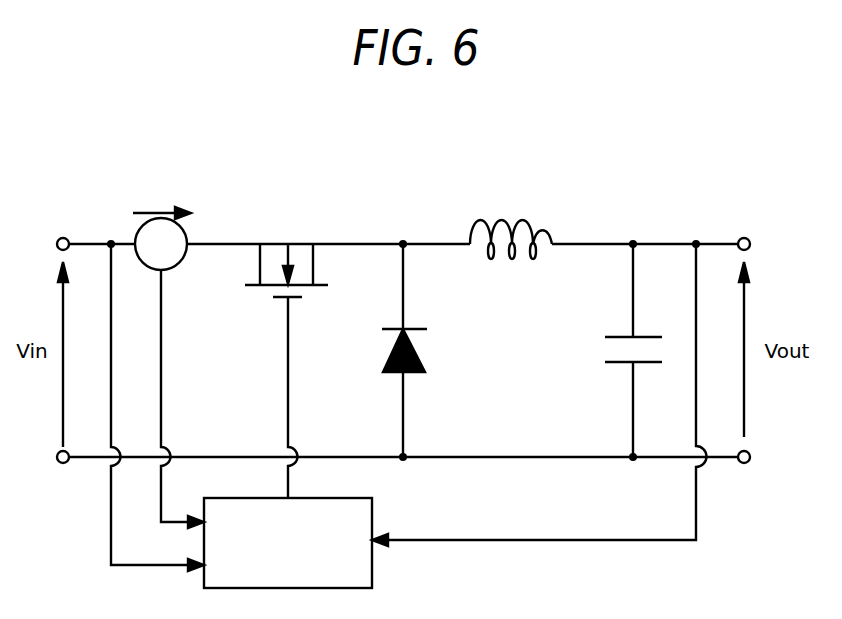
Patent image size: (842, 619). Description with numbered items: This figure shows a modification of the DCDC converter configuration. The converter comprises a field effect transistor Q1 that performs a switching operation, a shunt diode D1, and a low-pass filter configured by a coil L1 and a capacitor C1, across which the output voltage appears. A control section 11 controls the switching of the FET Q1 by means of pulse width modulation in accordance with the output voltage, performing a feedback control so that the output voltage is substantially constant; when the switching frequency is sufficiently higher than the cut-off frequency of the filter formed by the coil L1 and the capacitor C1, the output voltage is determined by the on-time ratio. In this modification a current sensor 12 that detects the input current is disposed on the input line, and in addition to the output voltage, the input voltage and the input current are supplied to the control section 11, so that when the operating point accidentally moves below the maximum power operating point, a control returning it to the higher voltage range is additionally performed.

The control section 11 is at (372, 520).
The current sensor 12 is at (180, 260).
The field effect transistor Q1 is at (286, 354).
The shunt diode D1 is at (386, 350).
The coil L1 is at (511, 222).
The capacitor C1 is at (611, 350).